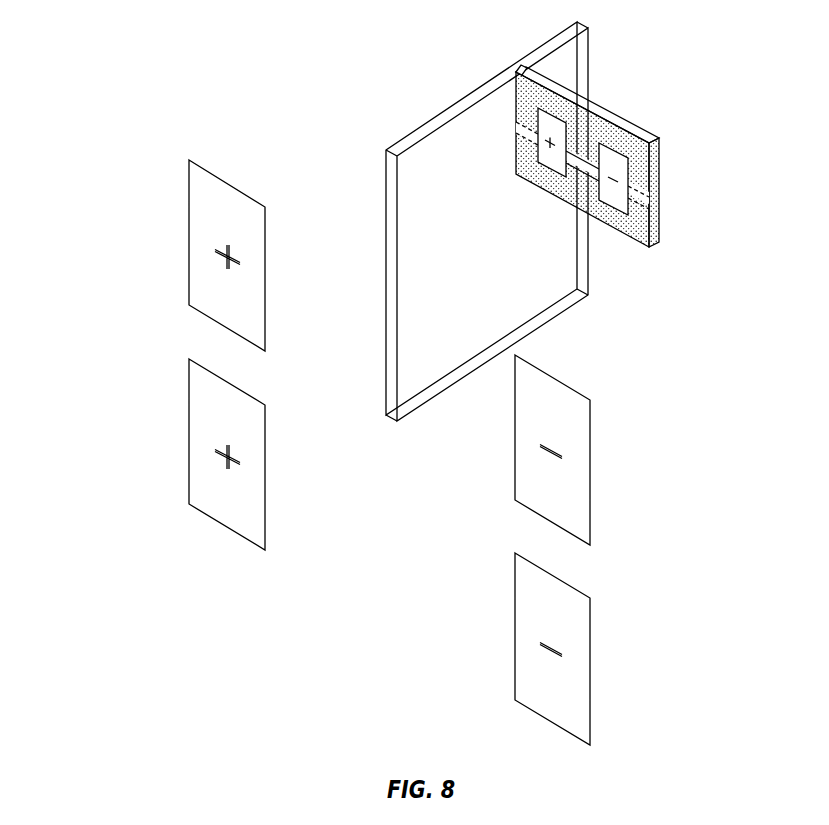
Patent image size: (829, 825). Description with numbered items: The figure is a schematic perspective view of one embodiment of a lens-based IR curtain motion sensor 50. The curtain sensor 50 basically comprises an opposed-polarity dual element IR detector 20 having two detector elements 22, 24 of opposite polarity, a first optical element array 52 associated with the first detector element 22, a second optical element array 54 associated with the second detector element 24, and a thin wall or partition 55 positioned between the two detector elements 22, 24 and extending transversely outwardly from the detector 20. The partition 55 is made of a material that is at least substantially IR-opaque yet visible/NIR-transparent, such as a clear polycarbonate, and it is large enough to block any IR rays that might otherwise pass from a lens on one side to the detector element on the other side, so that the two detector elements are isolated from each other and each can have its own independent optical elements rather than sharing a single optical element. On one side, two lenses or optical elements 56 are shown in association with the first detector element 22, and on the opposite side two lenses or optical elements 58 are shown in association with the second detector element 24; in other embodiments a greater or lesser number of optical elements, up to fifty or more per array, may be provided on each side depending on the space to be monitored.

The curtain sensor 50 is at (144, 84).
The opposed-polarity dual element IR detector 20 is at (607, 178).
The first detector element 22 is at (552, 158).
The second detector element 24 is at (615, 198).
The partition 55 is at (509, 291).
The first optical element array 52 is at (163, 160).
The second optical element array 54 is at (613, 400).
The optical elements 56 is at (265, 338).
The optical elements 58 is at (515, 482).